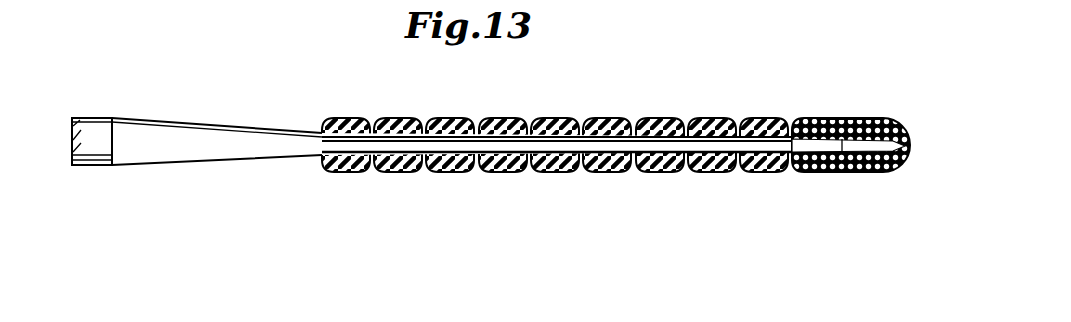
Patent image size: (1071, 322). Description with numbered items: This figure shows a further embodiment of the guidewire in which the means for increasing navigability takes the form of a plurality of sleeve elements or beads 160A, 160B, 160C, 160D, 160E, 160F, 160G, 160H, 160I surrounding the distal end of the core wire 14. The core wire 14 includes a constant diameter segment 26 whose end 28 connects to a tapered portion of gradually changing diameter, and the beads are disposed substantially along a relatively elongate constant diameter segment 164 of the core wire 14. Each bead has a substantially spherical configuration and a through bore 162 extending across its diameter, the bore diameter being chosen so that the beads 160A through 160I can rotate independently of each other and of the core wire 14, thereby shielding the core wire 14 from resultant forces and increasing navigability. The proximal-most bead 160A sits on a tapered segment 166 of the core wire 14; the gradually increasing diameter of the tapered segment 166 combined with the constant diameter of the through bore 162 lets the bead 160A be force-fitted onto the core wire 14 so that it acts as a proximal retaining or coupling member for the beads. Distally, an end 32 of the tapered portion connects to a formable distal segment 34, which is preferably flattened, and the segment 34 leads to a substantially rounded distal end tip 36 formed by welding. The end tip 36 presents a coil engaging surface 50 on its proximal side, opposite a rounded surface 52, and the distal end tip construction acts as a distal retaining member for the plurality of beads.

The core wire 14 is at (178, 142).
The constant diameter segment 26 is at (97, 133).
The end of the segment 28 is at (113, 143).
The tapered segment 166 is at (232, 153).
The elongate constant diameter segment 164 is at (517, 150).
The through bore 162 is at (722, 150).
The bead 160A is at (352, 165).
The bead 160B is at (392, 167).
The bead 160C is at (448, 167).
The bead 160D is at (492, 170).
The bead 160E is at (572, 170).
The bead 160F is at (610, 173).
The bead 160G is at (682, 170).
The bead 160H is at (708, 172).
The bead 160I is at (763, 170).
The coil engaging surface 50 is at (798, 126).
The distal end tip 36 is at (879, 117).
The formable distal segment 34 is at (862, 165).
The end of the segment 32 is at (840, 170).
The rounded surface 52 is at (906, 160).